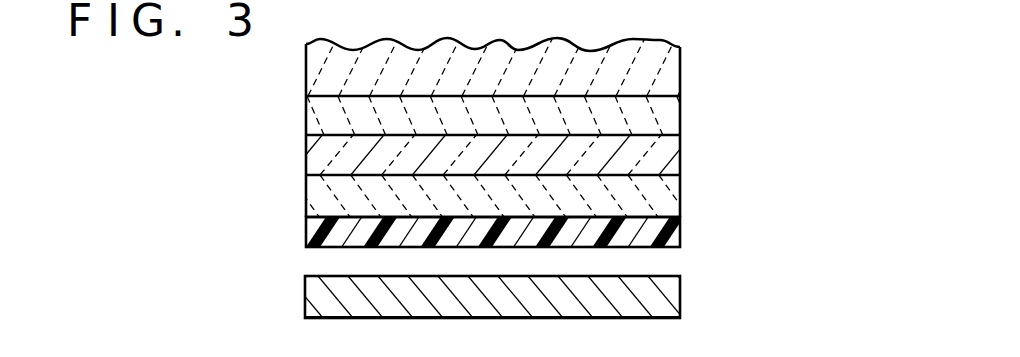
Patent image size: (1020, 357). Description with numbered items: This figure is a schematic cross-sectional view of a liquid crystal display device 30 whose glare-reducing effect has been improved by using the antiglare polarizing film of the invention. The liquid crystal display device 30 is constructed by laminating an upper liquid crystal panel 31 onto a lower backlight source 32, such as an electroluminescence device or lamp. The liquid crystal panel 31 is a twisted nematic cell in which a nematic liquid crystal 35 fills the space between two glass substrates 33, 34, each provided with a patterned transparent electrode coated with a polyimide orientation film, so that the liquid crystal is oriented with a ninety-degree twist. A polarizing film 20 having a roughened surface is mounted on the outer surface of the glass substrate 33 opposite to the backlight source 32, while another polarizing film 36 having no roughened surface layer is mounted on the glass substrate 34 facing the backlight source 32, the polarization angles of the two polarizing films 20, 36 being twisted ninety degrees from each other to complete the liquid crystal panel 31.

The polarizing film 20 is at (647, 75).
The glass substrate 33 is at (647, 113).
The nematic liquid crystal 35 is at (647, 163).
The glass substrate 34 is at (653, 200).
The polarizing film 36 is at (543, 219).
The liquid crystal panel 31 is at (565, 137).
The backlight source 32 is at (534, 284).
The liquid crystal display device 30 is at (594, 172).